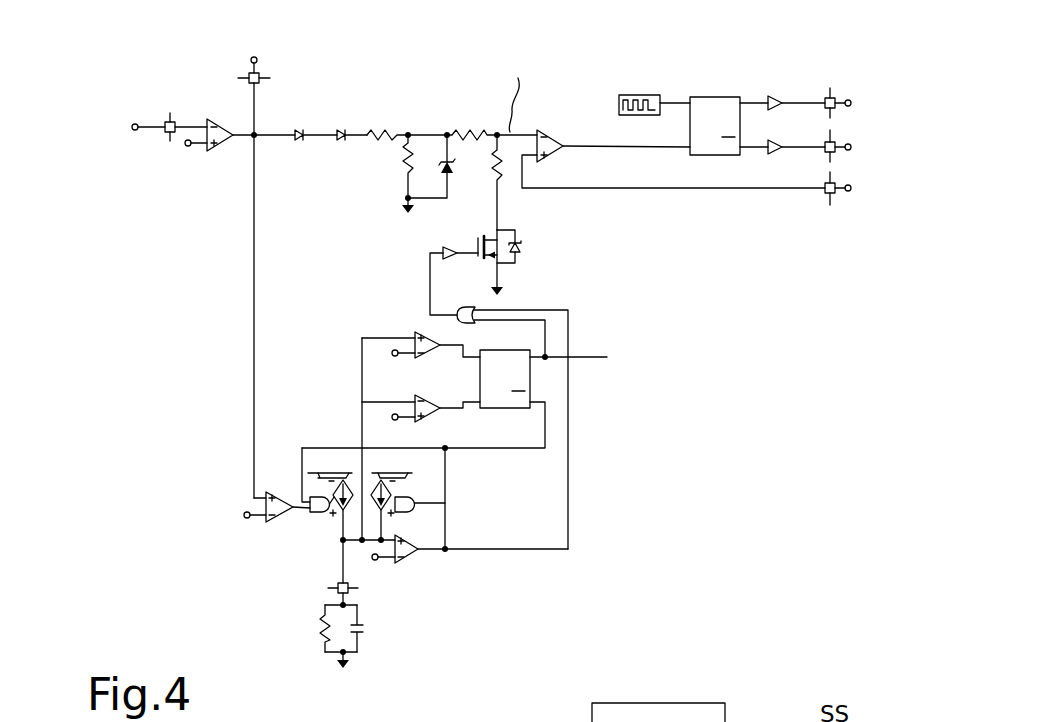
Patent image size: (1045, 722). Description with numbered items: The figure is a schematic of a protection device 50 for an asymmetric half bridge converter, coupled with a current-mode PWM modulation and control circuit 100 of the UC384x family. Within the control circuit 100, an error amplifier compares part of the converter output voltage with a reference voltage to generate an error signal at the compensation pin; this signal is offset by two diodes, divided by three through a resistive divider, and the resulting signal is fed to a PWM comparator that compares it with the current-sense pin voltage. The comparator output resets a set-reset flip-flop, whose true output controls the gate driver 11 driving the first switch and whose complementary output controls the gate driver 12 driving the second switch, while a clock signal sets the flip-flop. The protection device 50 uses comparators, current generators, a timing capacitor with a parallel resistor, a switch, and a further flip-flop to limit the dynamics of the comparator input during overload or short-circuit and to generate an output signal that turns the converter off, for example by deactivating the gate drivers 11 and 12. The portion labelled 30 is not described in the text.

The PWM modulation and control circuit 100 is at (220, 78).
The error amplifier block 30 is at (120, 158).
The protection device 50 is at (190, 350).
The gate driver 11 is at (782, 99).
The gate driver 12 is at (782, 152).